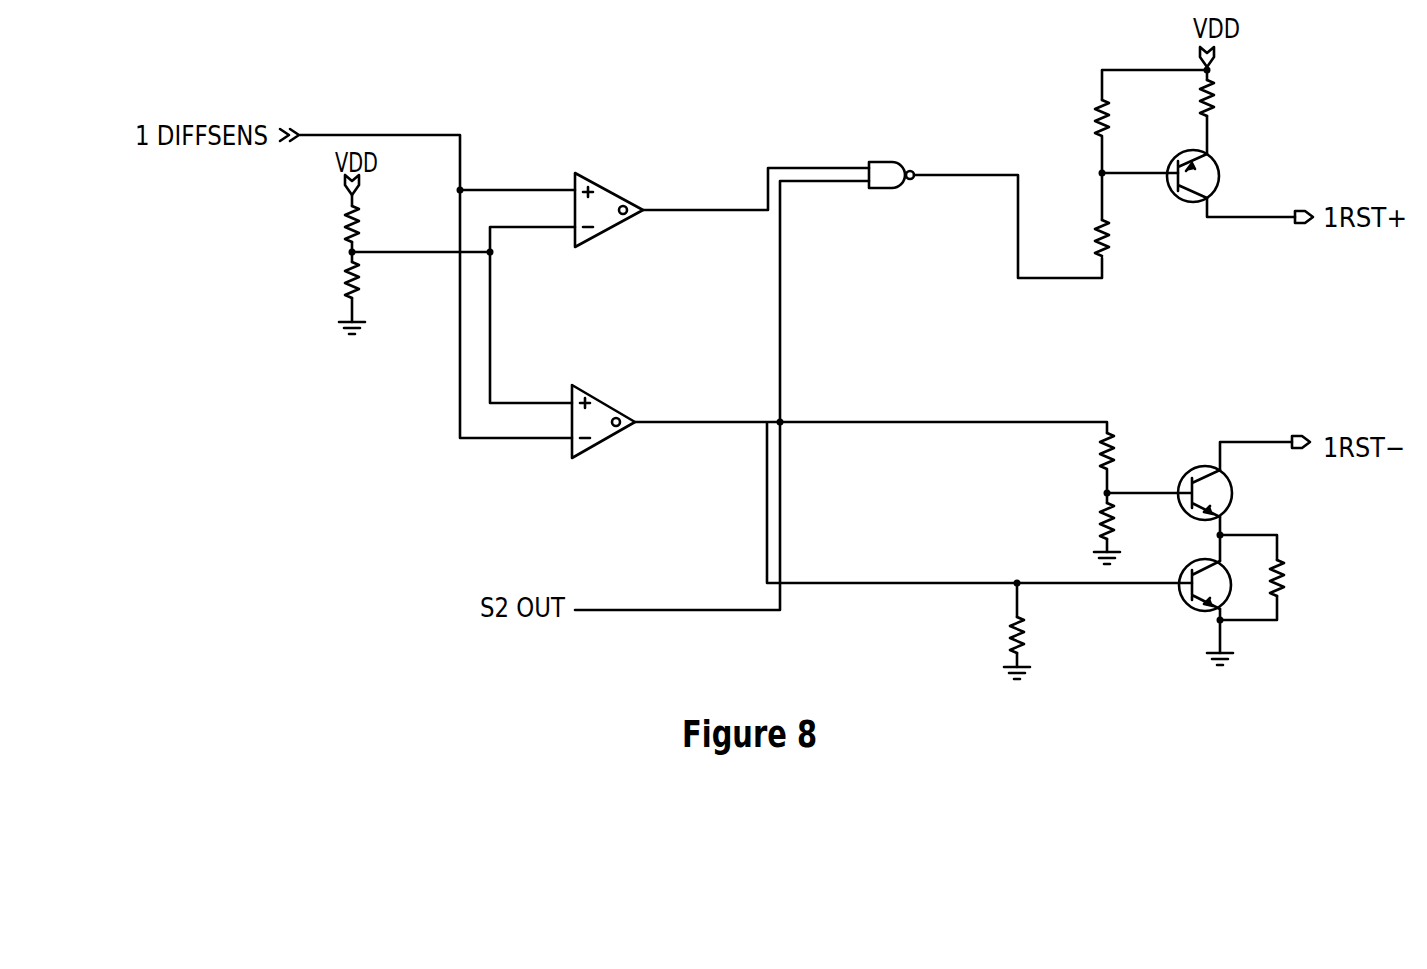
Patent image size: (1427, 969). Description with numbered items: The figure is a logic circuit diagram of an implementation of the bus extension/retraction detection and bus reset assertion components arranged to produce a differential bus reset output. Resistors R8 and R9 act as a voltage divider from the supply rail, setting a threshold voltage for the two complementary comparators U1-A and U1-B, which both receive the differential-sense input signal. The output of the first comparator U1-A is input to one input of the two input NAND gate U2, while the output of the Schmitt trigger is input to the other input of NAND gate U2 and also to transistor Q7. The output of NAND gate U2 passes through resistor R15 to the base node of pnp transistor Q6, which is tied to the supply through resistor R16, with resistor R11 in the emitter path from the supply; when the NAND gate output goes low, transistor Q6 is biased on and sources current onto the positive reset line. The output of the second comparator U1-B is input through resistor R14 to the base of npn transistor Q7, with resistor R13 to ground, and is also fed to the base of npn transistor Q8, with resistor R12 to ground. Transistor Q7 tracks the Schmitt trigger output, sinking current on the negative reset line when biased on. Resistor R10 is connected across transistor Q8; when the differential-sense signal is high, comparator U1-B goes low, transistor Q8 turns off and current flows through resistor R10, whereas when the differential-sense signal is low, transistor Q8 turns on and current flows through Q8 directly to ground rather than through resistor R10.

The resistor R8 is at (328, 224).
The resistor R9 is at (328, 281).
The resistor R10 is at (1310, 582).
The resistor R11 is at (1234, 99).
The resistor R12 is at (989, 635).
The resistor R13 is at (1078, 521).
The resistor R14 is at (1078, 452).
The resistor R15 is at (1077, 239).
The resistor R16 is at (1075, 118).
The first comparator U1-A is at (604, 187).
The second comparator U1-B is at (600, 398).
The two input NAND gate U2 is at (891, 199).
The pnp transistor Q6 is at (1220, 176).
The npn transistor Q7 is at (1192, 493).
The npn transistor Q8 is at (1186, 597).